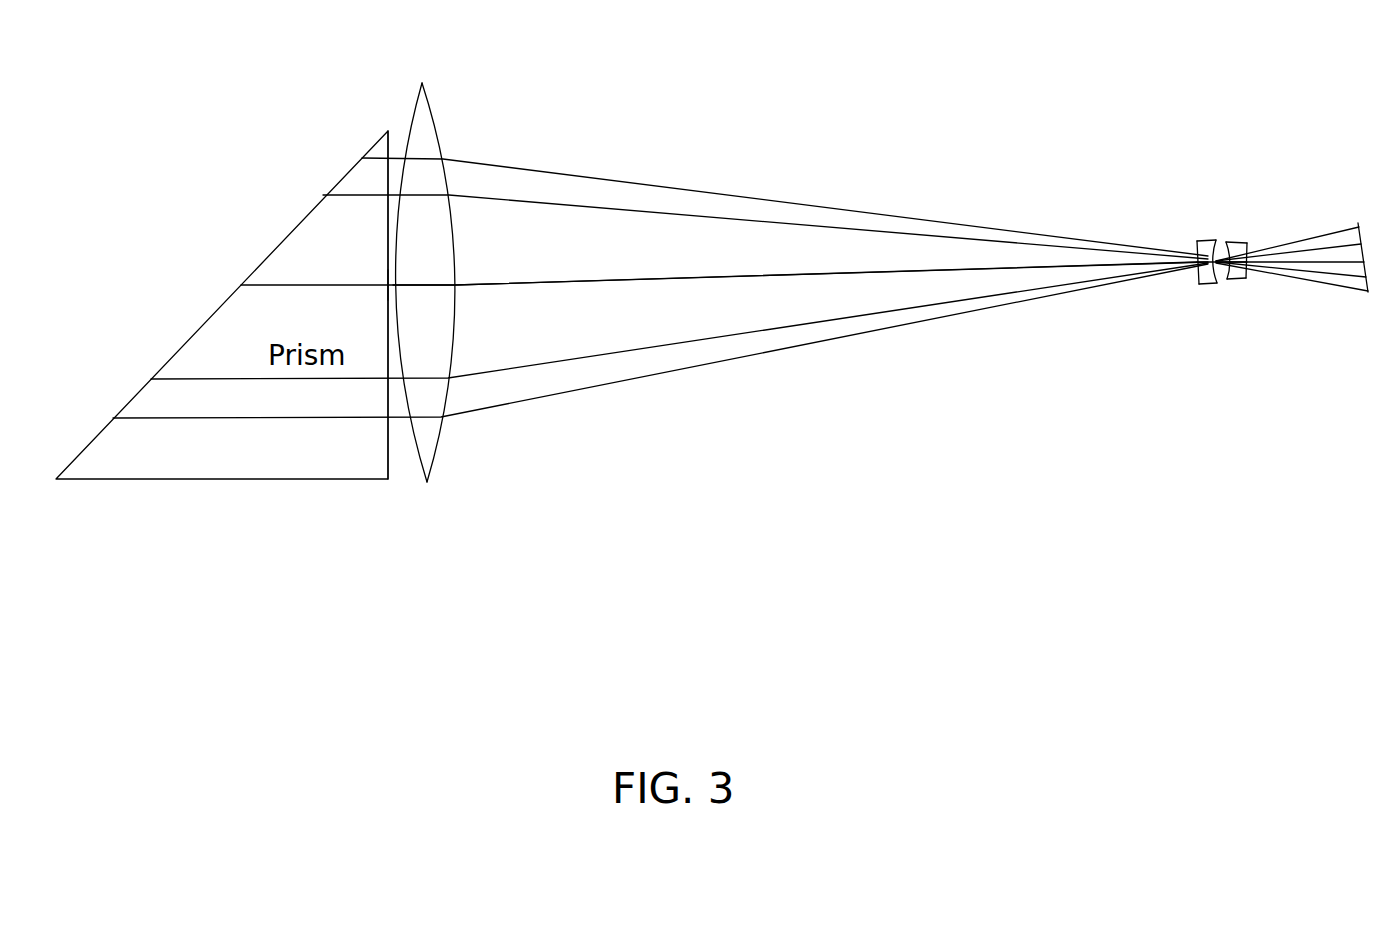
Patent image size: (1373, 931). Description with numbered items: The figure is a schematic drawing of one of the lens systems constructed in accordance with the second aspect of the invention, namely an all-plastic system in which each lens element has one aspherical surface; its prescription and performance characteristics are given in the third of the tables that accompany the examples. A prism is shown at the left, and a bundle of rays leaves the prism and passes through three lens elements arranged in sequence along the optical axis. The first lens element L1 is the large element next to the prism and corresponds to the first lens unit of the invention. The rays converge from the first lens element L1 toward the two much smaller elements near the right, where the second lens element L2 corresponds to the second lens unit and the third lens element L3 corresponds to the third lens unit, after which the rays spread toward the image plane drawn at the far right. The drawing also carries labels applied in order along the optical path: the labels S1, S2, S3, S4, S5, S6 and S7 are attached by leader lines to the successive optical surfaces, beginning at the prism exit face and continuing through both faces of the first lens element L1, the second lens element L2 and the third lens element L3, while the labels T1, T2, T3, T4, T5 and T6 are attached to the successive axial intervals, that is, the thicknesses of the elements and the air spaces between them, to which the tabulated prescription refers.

The first lens element L1 is at (505, 338).
The second lens element L2 is at (1147, 293).
The third lens element L3 is at (1299, 287).
The prism exit surface S1 is at (393, 455).
The first lens front surface S2 is at (417, 482).
The first lens rear surface S3 is at (438, 443).
The second lens front surface S4 is at (1197, 267).
The second lens rear surface S5 is at (1216, 283).
The third lens front surface S6 is at (1228, 280).
The third lens rear surface S7 is at (1248, 277).
The prism to first lens distance T1 is at (388, 285).
The first lens thickness T2 is at (428, 285).
The first lens to second lens distance T3 is at (807, 273).
The second lens thickness T4 is at (1198, 262).
The second lens to third lens distance T5 is at (1220, 257).
The third lens thickness T6 is at (1247, 260).